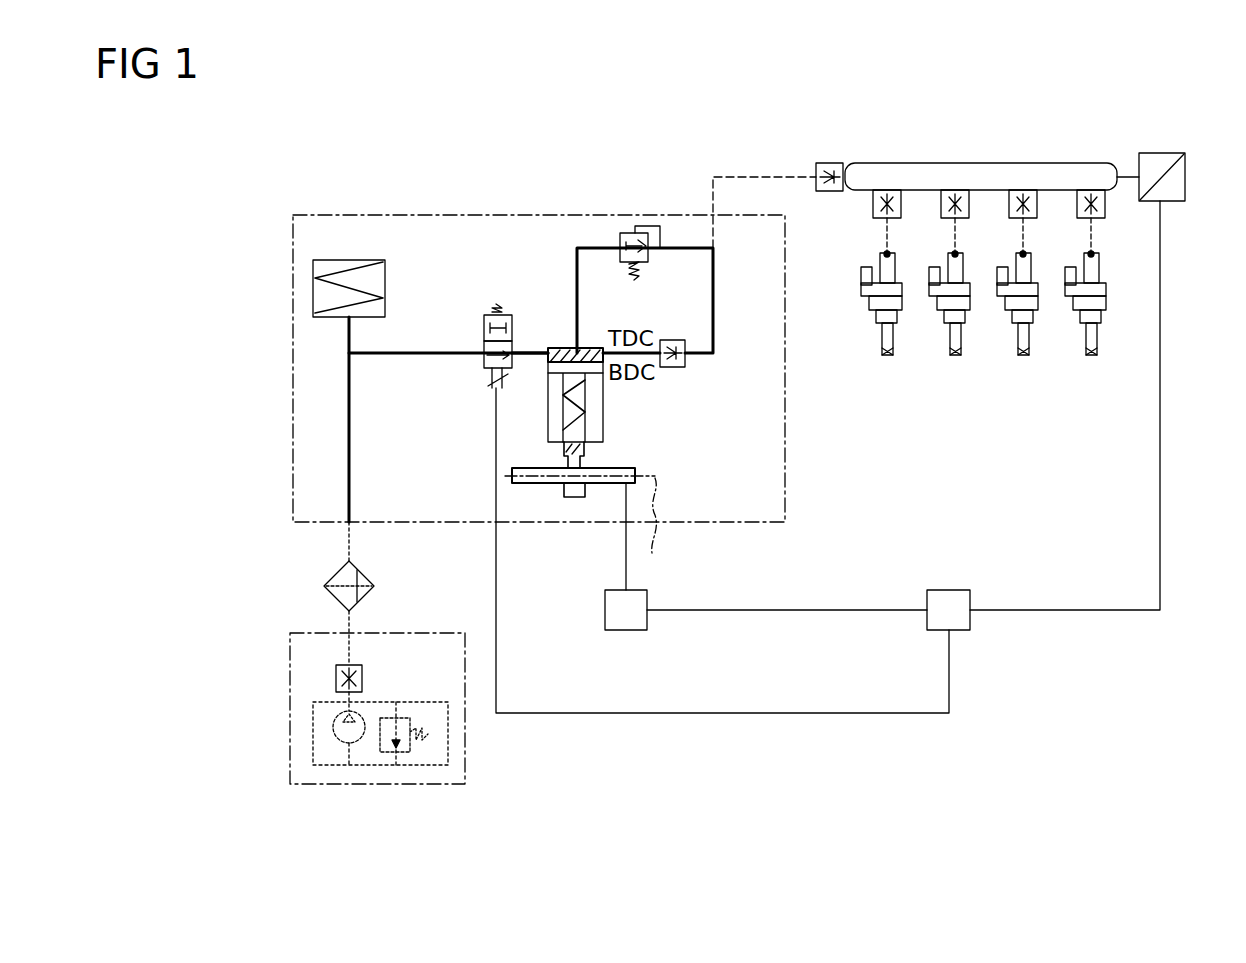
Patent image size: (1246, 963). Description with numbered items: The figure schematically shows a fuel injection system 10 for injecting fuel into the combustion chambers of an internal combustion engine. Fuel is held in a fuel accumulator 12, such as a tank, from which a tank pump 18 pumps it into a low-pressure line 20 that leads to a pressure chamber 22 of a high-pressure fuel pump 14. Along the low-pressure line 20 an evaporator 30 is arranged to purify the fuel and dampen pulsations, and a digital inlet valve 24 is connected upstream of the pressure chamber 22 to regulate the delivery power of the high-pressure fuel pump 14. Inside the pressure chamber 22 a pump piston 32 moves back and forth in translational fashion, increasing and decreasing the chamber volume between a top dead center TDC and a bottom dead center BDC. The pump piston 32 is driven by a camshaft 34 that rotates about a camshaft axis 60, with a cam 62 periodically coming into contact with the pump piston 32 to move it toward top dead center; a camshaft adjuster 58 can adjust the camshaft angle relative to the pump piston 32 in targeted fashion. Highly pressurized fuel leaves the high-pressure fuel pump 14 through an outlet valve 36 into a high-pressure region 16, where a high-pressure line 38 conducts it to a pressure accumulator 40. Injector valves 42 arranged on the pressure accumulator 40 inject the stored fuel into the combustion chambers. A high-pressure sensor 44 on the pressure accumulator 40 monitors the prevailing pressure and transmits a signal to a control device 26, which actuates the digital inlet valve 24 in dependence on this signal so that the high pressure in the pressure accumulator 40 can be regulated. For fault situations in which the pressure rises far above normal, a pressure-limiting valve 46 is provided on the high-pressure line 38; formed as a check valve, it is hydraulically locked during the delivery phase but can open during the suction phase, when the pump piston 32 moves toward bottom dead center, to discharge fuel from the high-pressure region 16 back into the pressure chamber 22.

The fuel injection system 10 is at (1198, 135).
The fuel accumulator 12 is at (415, 633).
The high-pressure fuel pump 14 is at (557, 326).
The high-pressure region 16 is at (690, 188).
The tank pump 18 is at (372, 768).
The low-pressure line 20 is at (349, 408).
The pressure chamber 22 is at (548, 357).
The digital inlet valve 24 is at (497, 315).
The control device 26 is at (322, 594).
The evaporator 30 is at (349, 260).
The pump piston 32 is at (598, 432).
The camshaft 34 is at (535, 483).
The outlet valve 36 is at (676, 358).
The high-pressure line 38 is at (715, 297).
The pressure accumulator 40 is at (982, 163).
The injector valves 42 is at (887, 358).
The high-pressure sensor 44 is at (1162, 153).
The pressure-limiting valve 46 is at (630, 238).
The camshaft adjuster 58 is at (624, 632).
The camshaft axis 60 is at (590, 531).
The cam 62 is at (576, 497).